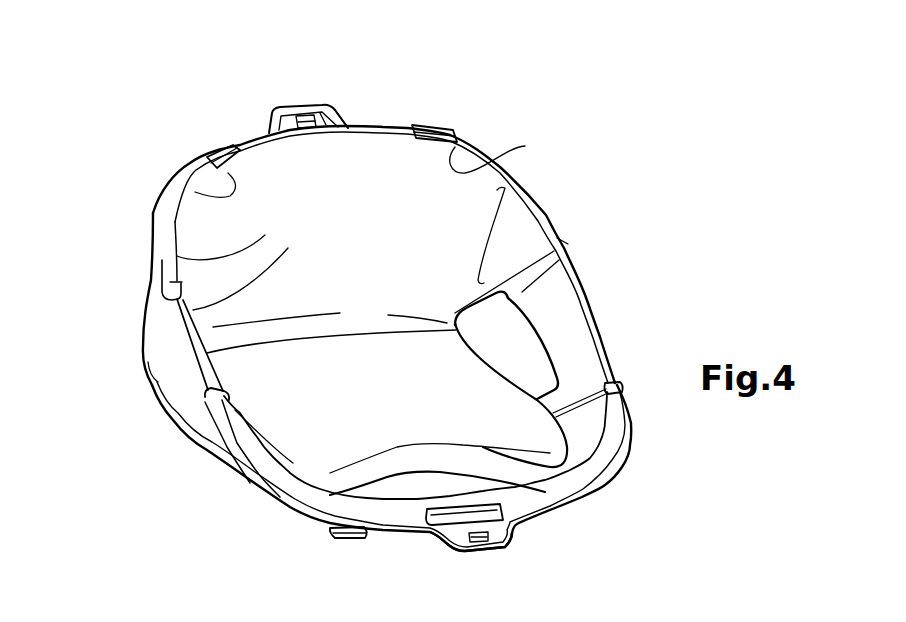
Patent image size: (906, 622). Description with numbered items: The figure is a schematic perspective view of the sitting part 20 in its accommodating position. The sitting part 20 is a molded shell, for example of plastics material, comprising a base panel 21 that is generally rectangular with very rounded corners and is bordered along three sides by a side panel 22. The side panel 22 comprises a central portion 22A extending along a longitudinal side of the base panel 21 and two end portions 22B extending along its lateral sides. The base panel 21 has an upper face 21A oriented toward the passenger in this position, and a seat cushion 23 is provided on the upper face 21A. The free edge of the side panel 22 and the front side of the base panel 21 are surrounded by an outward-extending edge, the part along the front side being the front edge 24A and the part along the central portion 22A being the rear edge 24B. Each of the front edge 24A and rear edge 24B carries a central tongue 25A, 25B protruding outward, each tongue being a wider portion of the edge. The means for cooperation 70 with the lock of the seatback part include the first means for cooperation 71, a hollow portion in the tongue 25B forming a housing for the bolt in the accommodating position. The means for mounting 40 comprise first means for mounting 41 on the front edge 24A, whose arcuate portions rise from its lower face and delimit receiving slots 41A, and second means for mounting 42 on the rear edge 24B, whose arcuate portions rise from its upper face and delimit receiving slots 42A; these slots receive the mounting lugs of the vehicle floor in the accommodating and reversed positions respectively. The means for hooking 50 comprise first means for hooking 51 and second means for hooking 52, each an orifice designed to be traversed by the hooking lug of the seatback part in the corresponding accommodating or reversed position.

The sitting part 20 is at (550, 208).
The base panel 21 is at (459, 483).
The upper face 21A is at (430, 483).
The side panel 22 is at (176, 255).
The central portion 22A is at (163, 312).
The end portions 22B is at (163, 358).
The seat cushion 23 is at (483, 395).
The front edge 24A is at (580, 478).
The rear edge 24B is at (390, 135).
The central tongue 25A is at (523, 533).
The central tongue 25B is at (399, 312).
The means for mounting 40 is at (322, 323).
The first means for mounting 41 is at (563, 510).
The receiving slots 41A is at (343, 539).
The second means for mounting 42 is at (228, 150).
The receiving slots 42A is at (228, 191).
The means for hooking 50 is at (298, 112).
The first means for hooking 51 is at (303, 129).
The second means for hooking 52 is at (443, 549).
The means for cooperation 70 is at (351, 114).
The first means for cooperation 71 is at (322, 119).